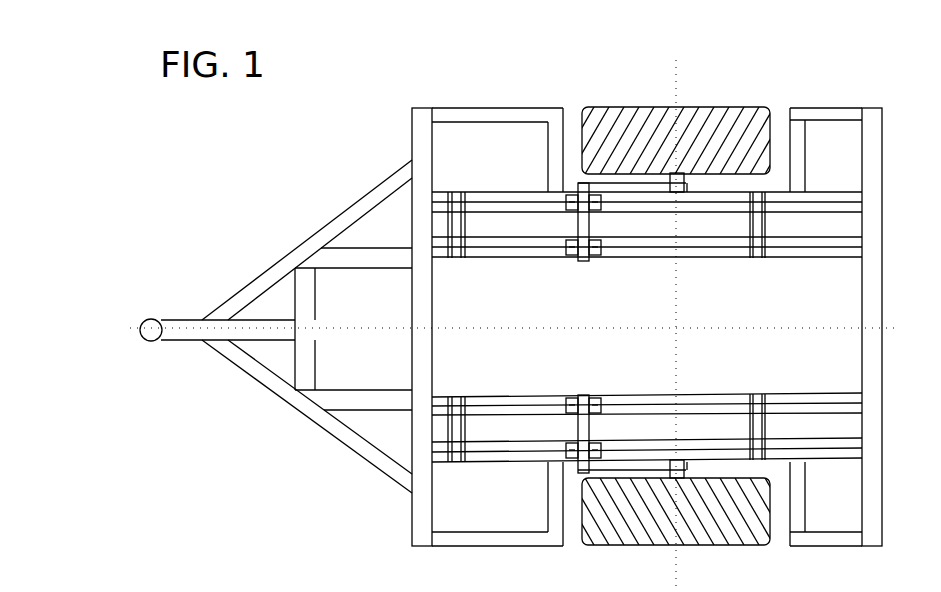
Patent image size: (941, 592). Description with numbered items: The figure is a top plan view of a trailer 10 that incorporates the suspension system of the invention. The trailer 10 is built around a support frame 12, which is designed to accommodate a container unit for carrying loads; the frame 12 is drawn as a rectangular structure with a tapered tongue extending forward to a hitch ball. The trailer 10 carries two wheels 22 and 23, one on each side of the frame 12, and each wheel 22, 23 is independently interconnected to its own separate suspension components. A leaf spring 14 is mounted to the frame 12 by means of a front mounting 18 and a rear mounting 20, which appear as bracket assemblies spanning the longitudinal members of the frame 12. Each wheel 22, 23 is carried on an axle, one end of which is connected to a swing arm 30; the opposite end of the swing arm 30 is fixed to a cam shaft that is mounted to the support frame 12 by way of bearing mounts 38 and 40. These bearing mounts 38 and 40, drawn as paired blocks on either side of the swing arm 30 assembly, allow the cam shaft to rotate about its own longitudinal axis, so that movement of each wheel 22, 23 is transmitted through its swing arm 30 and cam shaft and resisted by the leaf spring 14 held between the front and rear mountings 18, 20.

The trailer 10 is at (225, 418).
The support frame 12 is at (318, 242).
The leaf spring 14 is at (515, 228).
The front mounting 18 is at (468, 232).
The rear mounting 20 is at (757, 235).
The wheel 22 is at (745, 538).
The wheel 23 is at (742, 114).
The swing arm 30 is at (604, 185).
The bearing mount 38 is at (592, 248).
The bearing mount 40 is at (565, 215).